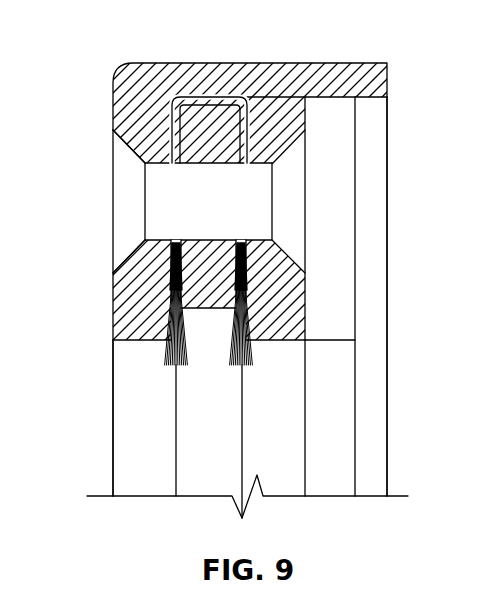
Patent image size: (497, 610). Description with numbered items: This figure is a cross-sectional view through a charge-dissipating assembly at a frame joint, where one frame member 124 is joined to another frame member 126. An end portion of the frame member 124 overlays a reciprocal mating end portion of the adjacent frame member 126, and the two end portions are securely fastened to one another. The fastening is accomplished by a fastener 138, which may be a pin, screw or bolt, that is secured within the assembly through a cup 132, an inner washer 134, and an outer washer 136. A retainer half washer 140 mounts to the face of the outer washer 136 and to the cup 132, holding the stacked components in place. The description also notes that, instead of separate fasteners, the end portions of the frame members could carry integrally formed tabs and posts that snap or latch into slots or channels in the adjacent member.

The frame member 124 is at (98, 303).
The frame member 126 is at (223, 314).
The cup 132 is at (112, 355).
The inner washer 134 is at (222, 98).
The outer washer 136 is at (290, 342).
The fastener 138 is at (112, 205).
The retainer half washer 140 is at (357, 295).